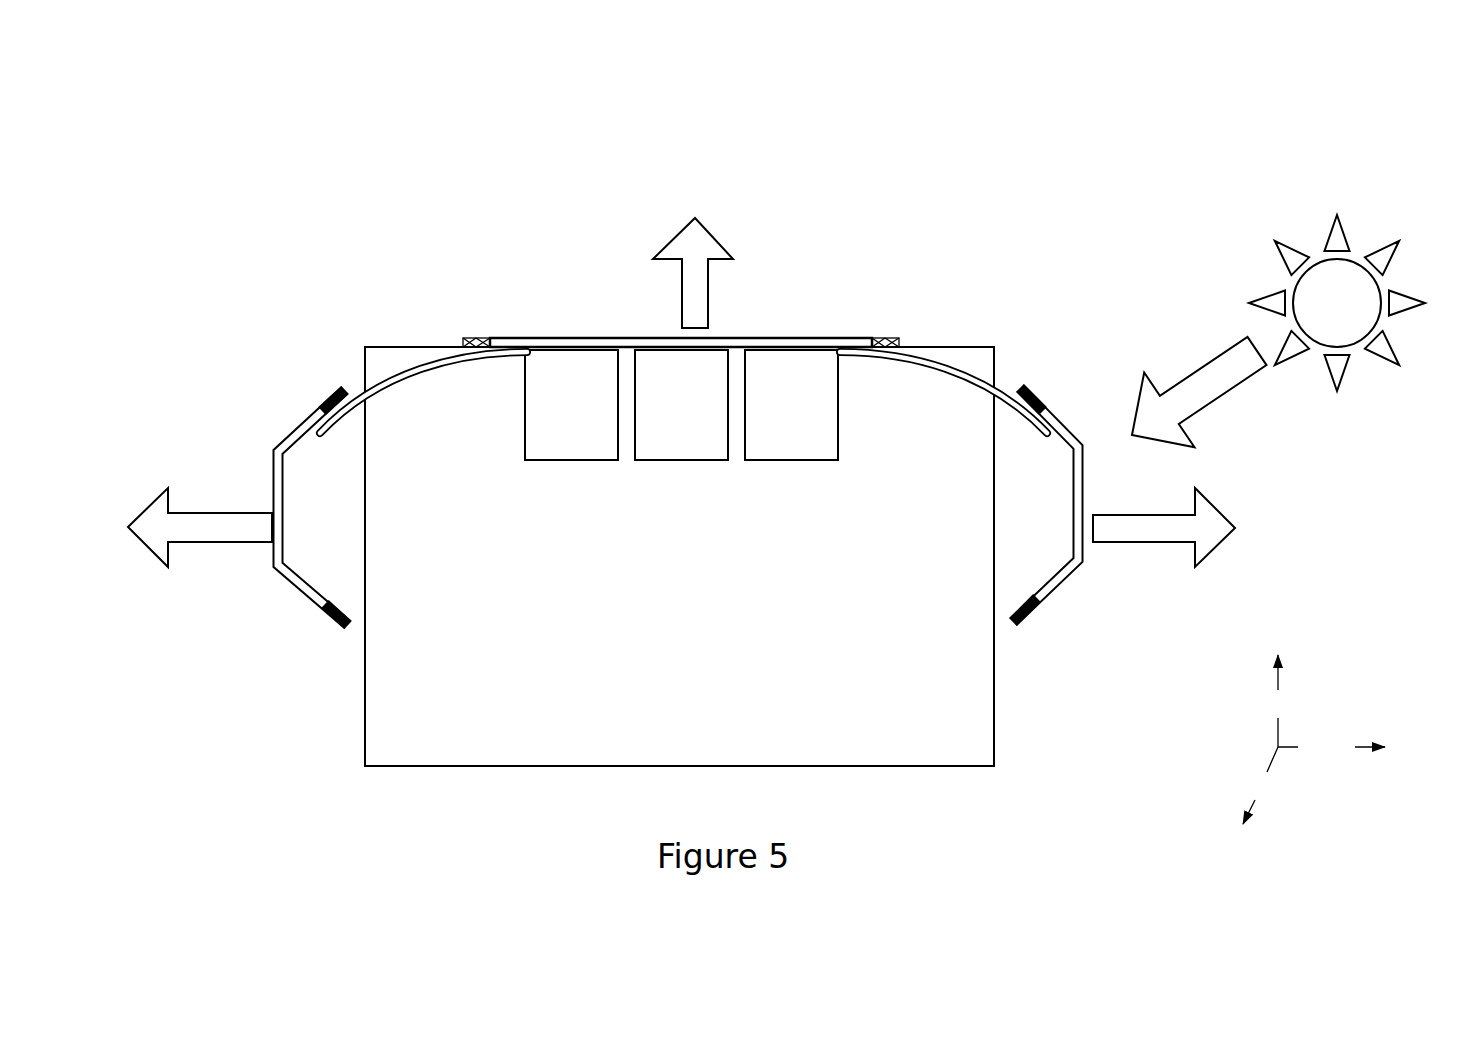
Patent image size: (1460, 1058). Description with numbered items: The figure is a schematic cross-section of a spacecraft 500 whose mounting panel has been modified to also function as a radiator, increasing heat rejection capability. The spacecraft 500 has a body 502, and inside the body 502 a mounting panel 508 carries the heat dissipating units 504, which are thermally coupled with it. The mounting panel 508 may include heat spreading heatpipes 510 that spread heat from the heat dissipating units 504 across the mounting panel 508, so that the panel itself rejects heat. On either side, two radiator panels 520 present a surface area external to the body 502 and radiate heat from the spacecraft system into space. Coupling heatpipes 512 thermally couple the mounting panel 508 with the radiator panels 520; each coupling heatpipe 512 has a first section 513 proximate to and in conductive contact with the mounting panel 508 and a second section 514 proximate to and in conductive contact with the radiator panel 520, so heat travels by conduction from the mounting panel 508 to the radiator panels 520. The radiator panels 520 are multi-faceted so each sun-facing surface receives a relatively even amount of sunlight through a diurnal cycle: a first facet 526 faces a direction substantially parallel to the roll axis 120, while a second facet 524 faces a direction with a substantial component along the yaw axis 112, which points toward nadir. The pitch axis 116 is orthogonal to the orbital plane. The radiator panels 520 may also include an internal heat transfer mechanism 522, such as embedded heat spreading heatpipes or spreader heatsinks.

The spacecraft 500 is at (272, 104).
The body 502 is at (366, 766).
The heat dissipating units 504 is at (547, 455).
The mounting panel 508 is at (893, 342).
The heat spreading heatpipes 510 is at (512, 338).
The coupling heatpipes 512 is at (417, 365).
The first section 513 is at (856, 372).
The second section 514 is at (1029, 437).
The radiator panels 520 is at (300, 427).
The internal heat transfer mechanism 522 is at (1047, 587).
The second facet 524 is at (1056, 393).
The first facet 526 is at (1090, 484).
The yaw axis 112 is at (1282, 701).
The pitch axis 116 is at (1264, 785).
The roll axis 120 is at (1331, 747).